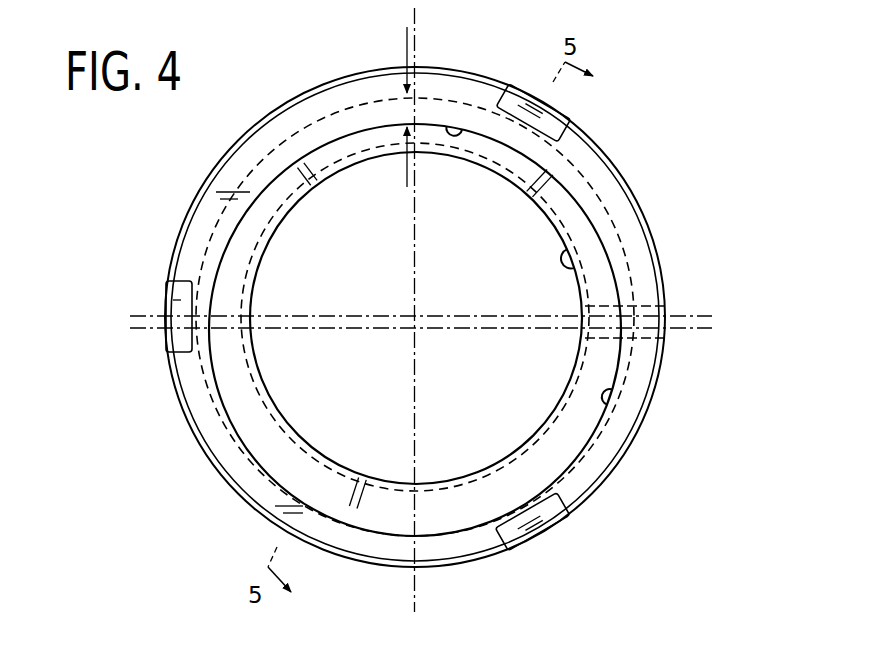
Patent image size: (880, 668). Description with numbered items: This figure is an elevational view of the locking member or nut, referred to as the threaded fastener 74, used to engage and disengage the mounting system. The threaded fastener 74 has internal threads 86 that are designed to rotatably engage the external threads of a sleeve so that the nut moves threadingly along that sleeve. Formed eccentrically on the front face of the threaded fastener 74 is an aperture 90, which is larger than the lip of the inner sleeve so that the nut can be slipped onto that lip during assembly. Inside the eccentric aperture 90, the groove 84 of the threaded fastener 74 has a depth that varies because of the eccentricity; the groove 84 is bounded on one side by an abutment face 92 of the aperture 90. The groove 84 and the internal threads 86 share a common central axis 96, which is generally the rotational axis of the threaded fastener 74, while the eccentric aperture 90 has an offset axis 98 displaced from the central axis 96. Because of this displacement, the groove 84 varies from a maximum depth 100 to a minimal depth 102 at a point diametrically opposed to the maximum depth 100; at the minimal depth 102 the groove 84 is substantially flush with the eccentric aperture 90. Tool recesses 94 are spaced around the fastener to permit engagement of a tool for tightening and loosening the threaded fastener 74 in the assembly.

The threaded fastener 74 is at (641, 449).
The groove 84 is at (450, 122).
The internal threads 86 is at (578, 255).
The aperture 90 is at (612, 393).
The abutment face 92 is at (270, 435).
The tool recesses 94 is at (182, 292).
The central axis 96 is at (413, 315).
The offset axis 98 is at (413, 329).
The maximum depth 100 is at (406, 50).
The minimal depth 102 is at (393, 548).